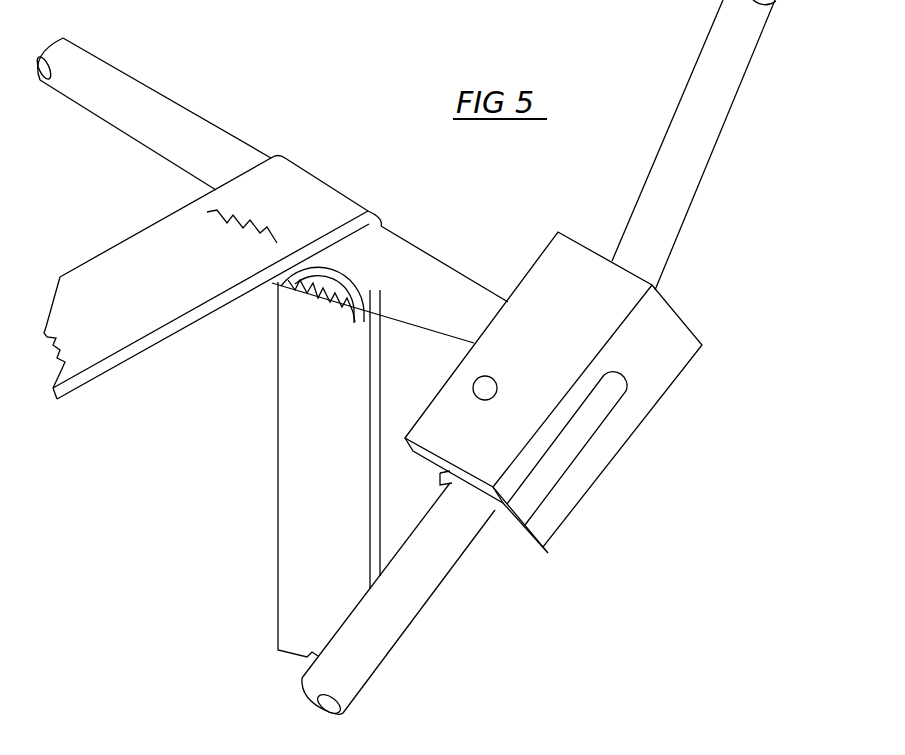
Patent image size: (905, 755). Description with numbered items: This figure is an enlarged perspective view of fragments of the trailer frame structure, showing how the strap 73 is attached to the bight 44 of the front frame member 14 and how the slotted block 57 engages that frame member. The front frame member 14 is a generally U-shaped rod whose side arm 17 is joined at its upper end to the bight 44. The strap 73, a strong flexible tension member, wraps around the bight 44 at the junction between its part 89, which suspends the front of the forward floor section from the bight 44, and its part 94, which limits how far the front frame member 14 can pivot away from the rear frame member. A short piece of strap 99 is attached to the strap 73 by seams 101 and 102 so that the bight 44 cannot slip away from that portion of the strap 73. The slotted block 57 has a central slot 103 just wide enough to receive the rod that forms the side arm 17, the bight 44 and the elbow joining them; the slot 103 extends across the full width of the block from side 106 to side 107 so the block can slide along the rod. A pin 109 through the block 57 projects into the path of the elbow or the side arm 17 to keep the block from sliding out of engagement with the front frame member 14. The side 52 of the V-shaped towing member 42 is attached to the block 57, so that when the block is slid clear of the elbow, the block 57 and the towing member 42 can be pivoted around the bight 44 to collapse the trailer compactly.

The front frame member 14 is at (403, 632).
The side arm 17 is at (468, 548).
The towing member 42 is at (740, 91).
The bight 44 is at (420, 250).
The first side of towing member 52 is at (718, 142).
The slotted block 57 is at (663, 307).
The strap 73 is at (115, 365).
The strap part 89 is at (384, 389).
The strap part 94 is at (118, 242).
The piece of strap 99 is at (353, 300).
The seam 101 is at (248, 225).
The seam 102 is at (317, 312).
The central slot 103 is at (600, 428).
The side of block 106 is at (672, 374).
The side of block 107 is at (536, 258).
The pin 109 is at (486, 376).